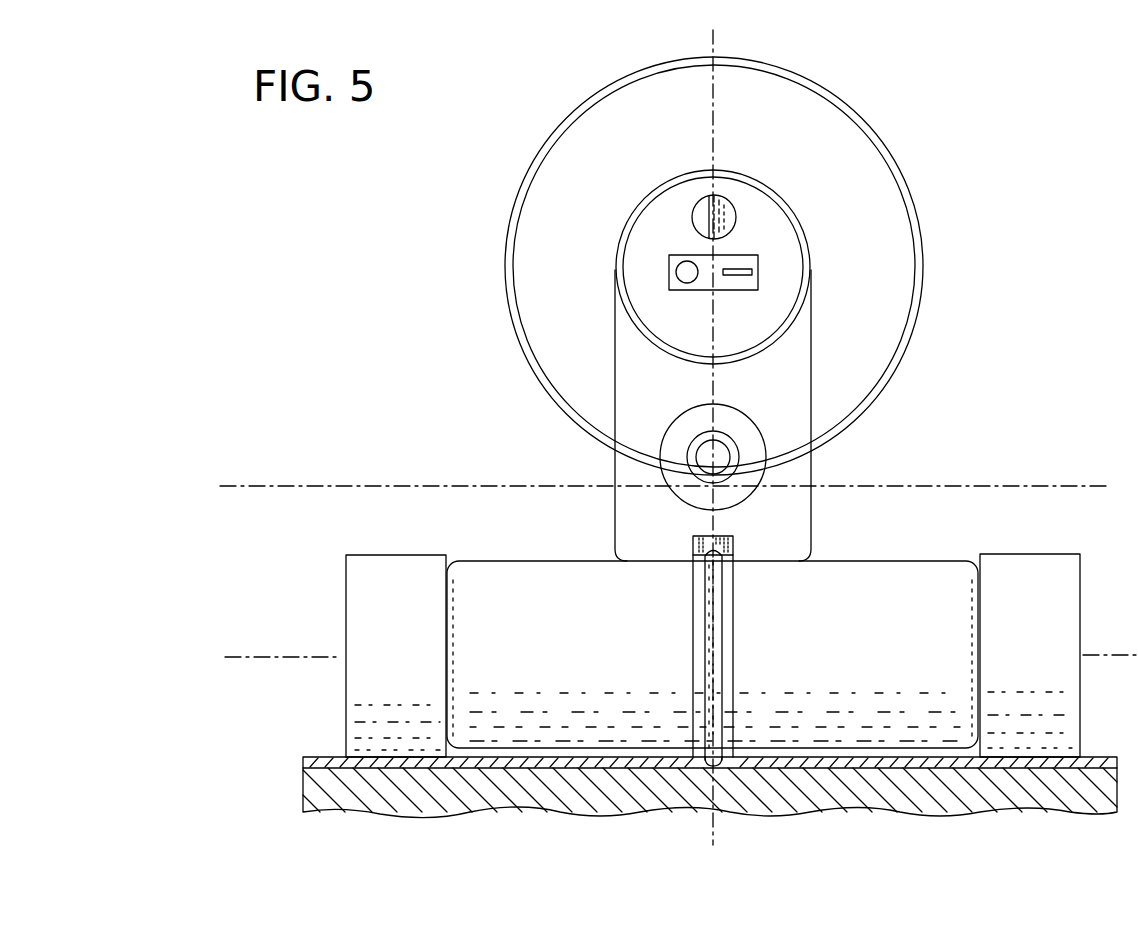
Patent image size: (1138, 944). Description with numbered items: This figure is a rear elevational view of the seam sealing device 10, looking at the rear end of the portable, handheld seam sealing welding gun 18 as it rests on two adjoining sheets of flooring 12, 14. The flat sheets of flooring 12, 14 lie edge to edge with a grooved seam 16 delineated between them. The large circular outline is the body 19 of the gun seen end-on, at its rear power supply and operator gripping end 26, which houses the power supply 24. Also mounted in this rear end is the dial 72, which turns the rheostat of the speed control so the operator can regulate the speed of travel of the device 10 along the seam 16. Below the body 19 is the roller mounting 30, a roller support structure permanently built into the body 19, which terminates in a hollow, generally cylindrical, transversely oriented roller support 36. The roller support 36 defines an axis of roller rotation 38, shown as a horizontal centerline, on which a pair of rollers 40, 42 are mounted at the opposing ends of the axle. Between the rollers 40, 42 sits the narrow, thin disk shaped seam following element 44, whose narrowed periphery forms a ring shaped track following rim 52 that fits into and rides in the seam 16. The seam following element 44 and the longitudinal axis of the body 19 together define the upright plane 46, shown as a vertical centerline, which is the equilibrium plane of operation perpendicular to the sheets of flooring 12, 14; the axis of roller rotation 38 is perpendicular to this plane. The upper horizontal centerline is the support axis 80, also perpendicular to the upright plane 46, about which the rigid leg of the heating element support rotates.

The device 10 is at (910, 100).
The sheet of flooring 12 is at (328, 757).
The sheet of flooring 14 is at (1097, 757).
The seam 16 is at (723, 746).
The seam sealing welding gun 18 is at (490, 296).
The body 19 is at (896, 163).
The power supply 24 is at (672, 178).
The power supply and operator gripping end 26 is at (750, 216).
The roller mounting 30 is at (815, 522).
The roller support 36 is at (912, 580).
The axis of roller rotation 38 is at (268, 655).
The roller 40 is at (1027, 578).
The roller 42 is at (395, 582).
The seam following element 44 is at (723, 610).
The upright plane 46 is at (713, 828).
The track following rim 52 is at (713, 545).
The dial 72 is at (738, 422).
The support axis 80 is at (1033, 484).